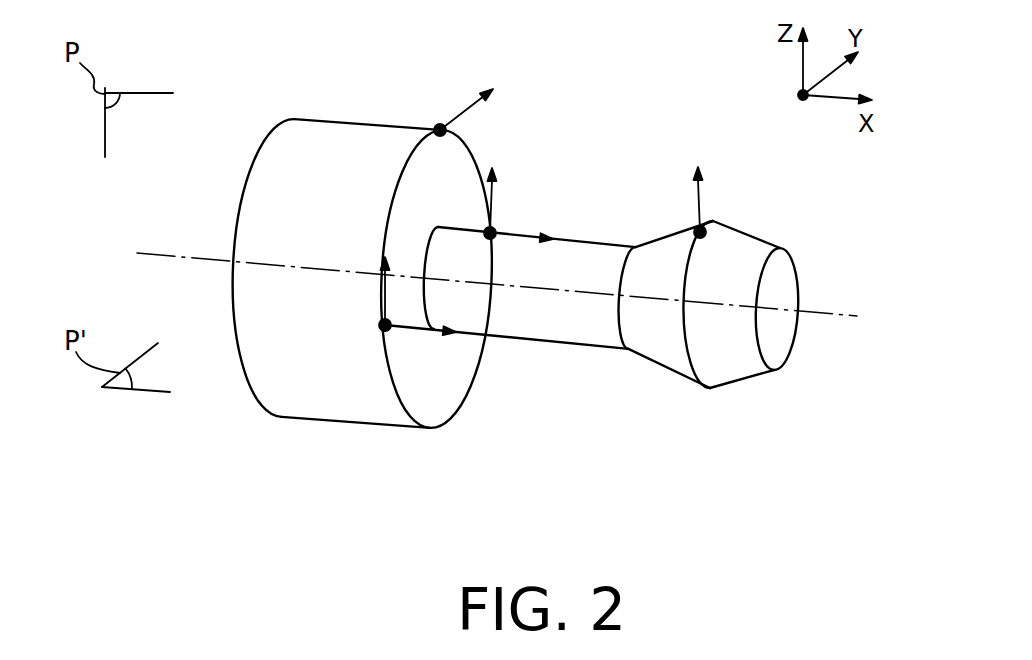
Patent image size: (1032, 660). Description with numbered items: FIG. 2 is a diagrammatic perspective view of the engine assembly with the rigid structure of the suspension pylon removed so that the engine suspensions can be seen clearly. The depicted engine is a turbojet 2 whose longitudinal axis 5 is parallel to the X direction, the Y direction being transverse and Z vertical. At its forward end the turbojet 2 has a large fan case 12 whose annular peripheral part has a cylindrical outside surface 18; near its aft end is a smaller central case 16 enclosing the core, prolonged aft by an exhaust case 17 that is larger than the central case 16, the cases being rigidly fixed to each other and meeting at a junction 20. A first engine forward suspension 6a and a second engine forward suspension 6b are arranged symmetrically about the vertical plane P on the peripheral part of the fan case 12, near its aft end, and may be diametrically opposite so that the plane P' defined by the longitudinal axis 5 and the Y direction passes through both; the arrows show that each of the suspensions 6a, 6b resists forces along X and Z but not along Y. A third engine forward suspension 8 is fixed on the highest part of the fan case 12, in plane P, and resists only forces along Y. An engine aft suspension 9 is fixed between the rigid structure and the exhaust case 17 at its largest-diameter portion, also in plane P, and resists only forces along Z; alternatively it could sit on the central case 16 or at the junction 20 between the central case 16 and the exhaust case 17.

The turbojet 2 is at (516, 299).
The longitudinal axis 5 is at (160, 254).
The first engine forward suspension 6a is at (383, 325).
The second engine forward suspension 6b is at (493, 231).
The third engine forward suspension 8 is at (438, 125).
The engine aft suspension 9 is at (705, 233).
The fan case 12 is at (290, 419).
The central case 16 is at (541, 332).
The exhaust case 17 is at (720, 389).
The cylindrical outside surface 18 is at (325, 132).
The junction 20 is at (624, 346).